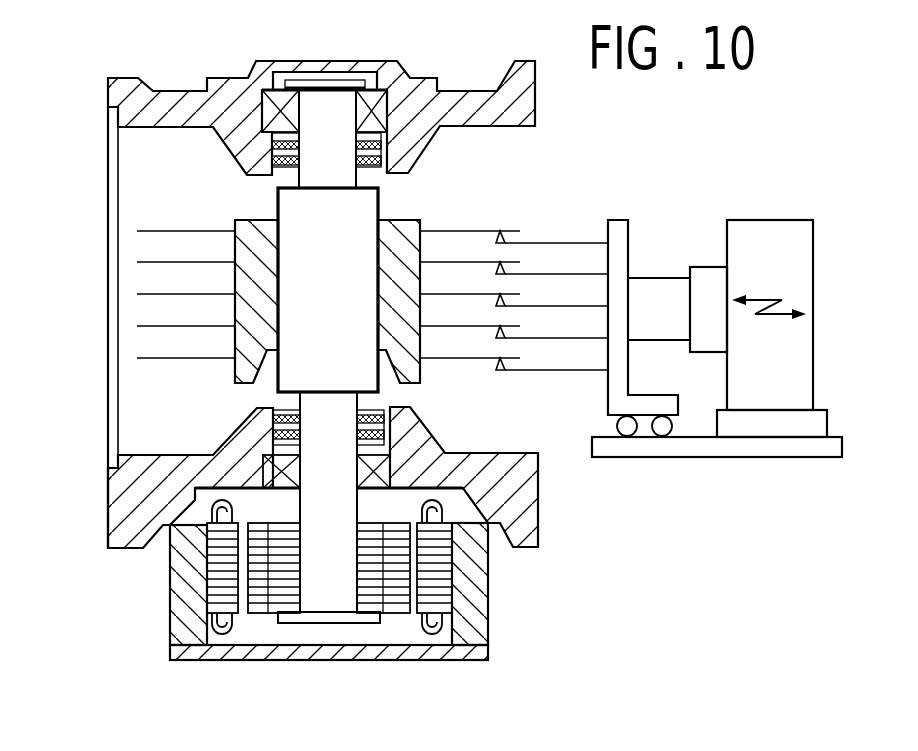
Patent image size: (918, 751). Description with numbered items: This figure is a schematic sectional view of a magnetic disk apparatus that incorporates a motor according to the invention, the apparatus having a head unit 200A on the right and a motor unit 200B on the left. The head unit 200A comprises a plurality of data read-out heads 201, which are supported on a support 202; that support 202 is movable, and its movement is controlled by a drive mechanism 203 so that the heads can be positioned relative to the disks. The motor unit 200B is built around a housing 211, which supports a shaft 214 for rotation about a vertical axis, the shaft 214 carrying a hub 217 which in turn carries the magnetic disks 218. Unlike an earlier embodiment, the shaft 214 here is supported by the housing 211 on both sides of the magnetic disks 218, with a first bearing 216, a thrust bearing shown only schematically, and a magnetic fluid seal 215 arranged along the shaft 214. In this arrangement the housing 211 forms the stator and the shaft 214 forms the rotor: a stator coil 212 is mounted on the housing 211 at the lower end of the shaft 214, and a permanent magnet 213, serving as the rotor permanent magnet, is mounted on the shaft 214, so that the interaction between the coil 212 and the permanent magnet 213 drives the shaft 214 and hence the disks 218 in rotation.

The housing 211 is at (120, 80).
The first bearing 216 is at (250, 63).
The shaft 214 is at (337, 113).
The hub 217 is at (398, 238).
The magnetic disks 218 is at (158, 231).
The data read-out heads 201 is at (523, 372).
The support 202 is at (627, 220).
The drive mechanism 203 is at (774, 219).
The magnetic fluid seal 215 is at (288, 437).
The stator coil 212 is at (438, 572).
The permanent magnet 213 is at (283, 588).
The motor unit 200B is at (200, 377).
The head unit 200A is at (830, 542).